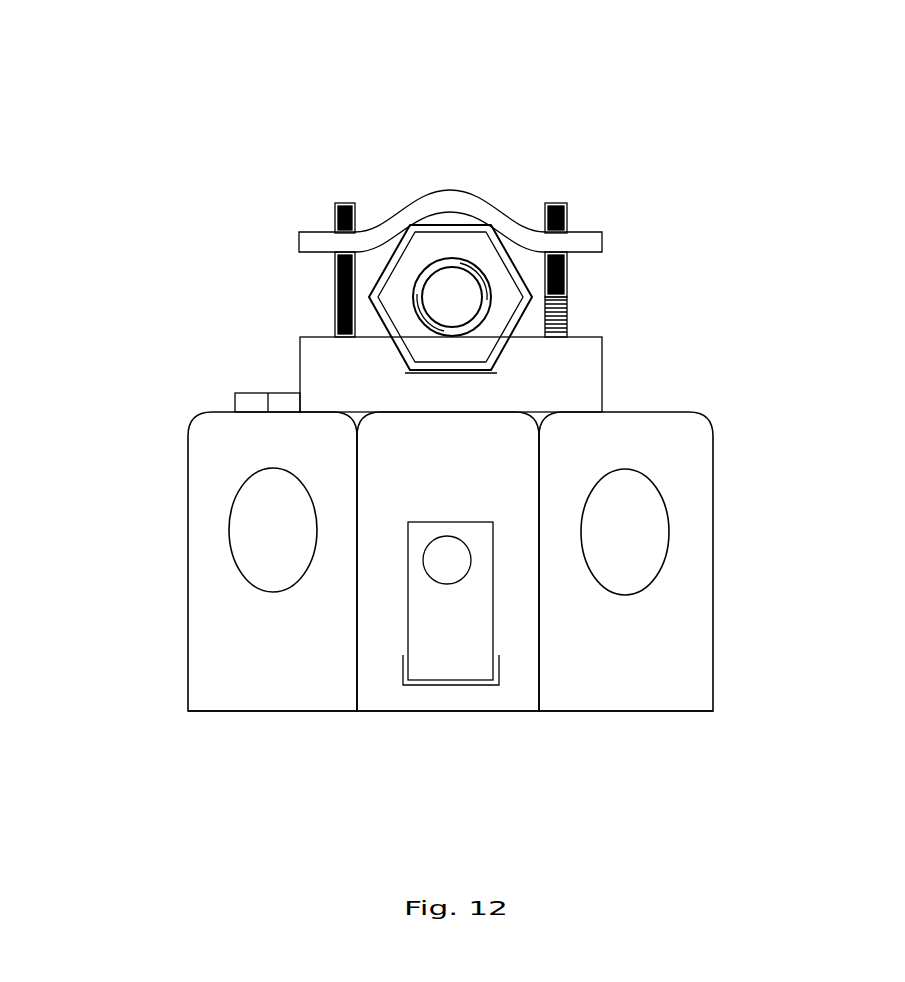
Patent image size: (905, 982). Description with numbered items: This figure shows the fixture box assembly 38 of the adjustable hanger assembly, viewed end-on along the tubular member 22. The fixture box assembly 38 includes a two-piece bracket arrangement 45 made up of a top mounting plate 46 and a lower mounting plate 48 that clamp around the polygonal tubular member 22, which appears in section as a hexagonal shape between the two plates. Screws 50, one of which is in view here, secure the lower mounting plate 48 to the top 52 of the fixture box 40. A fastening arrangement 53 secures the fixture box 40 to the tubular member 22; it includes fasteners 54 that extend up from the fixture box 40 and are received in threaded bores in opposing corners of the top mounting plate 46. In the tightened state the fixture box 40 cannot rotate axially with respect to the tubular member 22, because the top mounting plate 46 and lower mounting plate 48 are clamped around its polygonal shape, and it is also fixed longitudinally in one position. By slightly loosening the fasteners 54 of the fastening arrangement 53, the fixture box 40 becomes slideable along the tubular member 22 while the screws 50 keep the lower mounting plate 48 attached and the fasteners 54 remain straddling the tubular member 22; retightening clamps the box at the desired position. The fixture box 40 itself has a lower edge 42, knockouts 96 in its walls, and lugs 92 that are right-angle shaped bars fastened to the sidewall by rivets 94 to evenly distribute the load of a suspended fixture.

The fixture box assembly 38 is at (250, 126).
The tubular member 22 is at (440, 233).
The fasteners 54 is at (547, 207).
The fastening arrangement 53 is at (592, 217).
The two-piece bracket arrangement 45 is at (602, 363).
The top mounting plate 46 is at (299, 240).
The screws 50 is at (567, 320).
The lower mounting plate 48 is at (313, 359).
The top of the fixture box 52 is at (662, 412).
The fixture box 40 is at (432, 481).
The knockouts 96 is at (260, 541).
The rivets 94 is at (428, 573).
The lugs 92 is at (439, 648).
The lower edge 42 is at (640, 711).